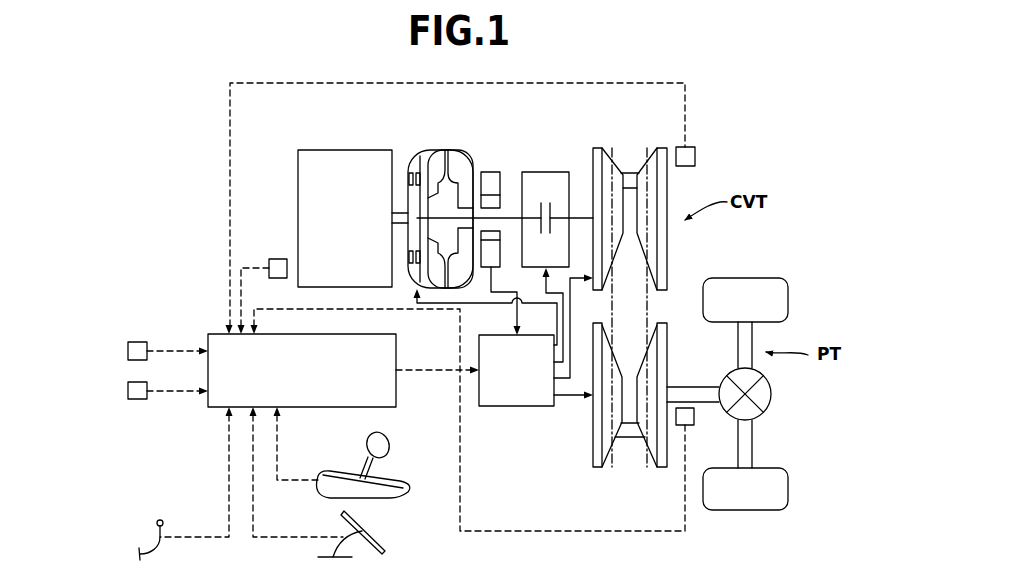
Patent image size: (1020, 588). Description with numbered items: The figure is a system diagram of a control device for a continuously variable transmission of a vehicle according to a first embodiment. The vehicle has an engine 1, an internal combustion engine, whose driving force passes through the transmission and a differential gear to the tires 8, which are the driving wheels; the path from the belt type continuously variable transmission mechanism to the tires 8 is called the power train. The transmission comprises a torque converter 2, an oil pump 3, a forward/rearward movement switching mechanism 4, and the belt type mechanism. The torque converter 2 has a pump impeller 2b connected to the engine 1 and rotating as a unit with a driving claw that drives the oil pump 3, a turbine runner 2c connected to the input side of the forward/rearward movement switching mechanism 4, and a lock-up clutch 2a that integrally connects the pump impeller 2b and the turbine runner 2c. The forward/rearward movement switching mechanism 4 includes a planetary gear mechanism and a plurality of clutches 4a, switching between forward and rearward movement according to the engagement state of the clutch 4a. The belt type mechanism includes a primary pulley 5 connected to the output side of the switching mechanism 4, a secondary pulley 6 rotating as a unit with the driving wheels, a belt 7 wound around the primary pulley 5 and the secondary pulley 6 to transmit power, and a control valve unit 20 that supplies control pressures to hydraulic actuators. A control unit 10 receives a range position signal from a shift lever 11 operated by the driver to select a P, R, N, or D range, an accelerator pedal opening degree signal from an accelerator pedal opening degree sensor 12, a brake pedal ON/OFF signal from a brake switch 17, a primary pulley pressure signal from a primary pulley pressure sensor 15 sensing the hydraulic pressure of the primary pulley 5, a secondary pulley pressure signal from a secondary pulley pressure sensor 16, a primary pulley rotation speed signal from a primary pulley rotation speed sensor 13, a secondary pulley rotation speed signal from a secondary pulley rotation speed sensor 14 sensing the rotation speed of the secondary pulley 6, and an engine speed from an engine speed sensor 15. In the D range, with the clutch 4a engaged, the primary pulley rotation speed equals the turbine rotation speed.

The engine 1 is at (348, 150).
The torque converter 2 is at (447, 133).
The lock-up clutch 2a is at (420, 160).
The pump impeller 2b is at (462, 160).
The turbine runner 2c is at (438, 162).
The oil pump 3 is at (495, 157).
The forward/rearward movement switching mechanism 4 is at (564, 157).
The clutch 4a is at (547, 191).
The primary pulley 5 is at (638, 143).
The secondary pulley 6 is at (625, 468).
The belt 7 is at (645, 318).
The tires 8 is at (790, 293).
The control unit 10 is at (208, 337).
The shift lever 11 is at (392, 478).
The accelerator pedal opening degree sensor 12 is at (375, 535).
The primary pulley rotation speed sensor 13 is at (696, 156).
The secondary pulley rotation speed sensor 14 is at (694, 417).
The primary pulley pressure sensor 15 is at (278, 258).
The secondary pulley pressure sensor 16 is at (128, 390).
The brake switch 17 is at (157, 523).
The control valve unit 20 is at (515, 407).